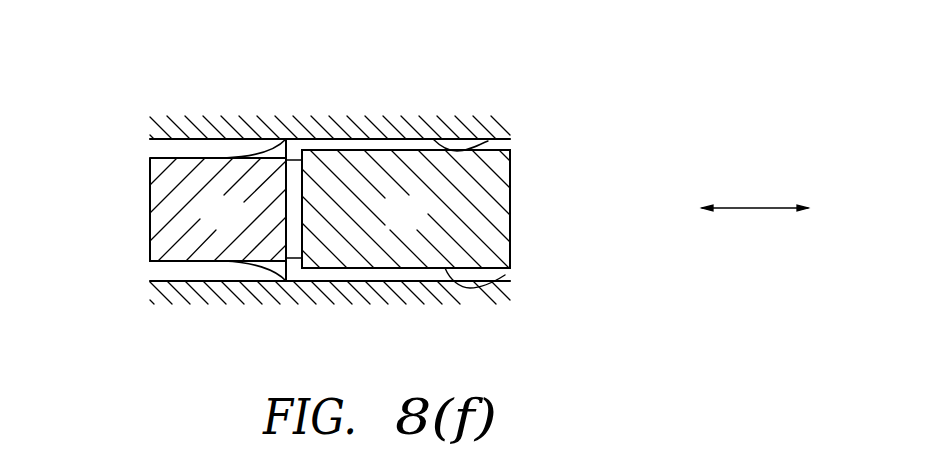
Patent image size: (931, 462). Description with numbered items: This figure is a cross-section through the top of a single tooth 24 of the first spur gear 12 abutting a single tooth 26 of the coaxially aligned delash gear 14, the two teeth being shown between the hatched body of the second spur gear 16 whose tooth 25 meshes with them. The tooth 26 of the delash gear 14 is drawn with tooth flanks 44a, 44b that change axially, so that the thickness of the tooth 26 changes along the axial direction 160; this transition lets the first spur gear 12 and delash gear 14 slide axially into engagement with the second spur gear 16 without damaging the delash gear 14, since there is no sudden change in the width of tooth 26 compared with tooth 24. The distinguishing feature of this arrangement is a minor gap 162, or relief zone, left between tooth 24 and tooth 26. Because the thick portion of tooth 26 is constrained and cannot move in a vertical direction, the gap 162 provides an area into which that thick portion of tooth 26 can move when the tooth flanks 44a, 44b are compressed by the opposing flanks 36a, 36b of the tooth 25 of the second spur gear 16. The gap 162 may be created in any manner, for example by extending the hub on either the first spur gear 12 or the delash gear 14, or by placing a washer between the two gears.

The first spur gear 12 is at (518, 210).
The delash gear 14 is at (136, 215).
The second spur gear 16 is at (518, 122).
The tooth of first spur gear 24 is at (424, 227).
The tooth of second spur gear 25 is at (358, 129).
The tooth of delash gear 26 is at (239, 227).
The flank of second spur gear tooth 36a is at (488, 141).
The flank of second spur gear tooth 36b is at (505, 275).
The tooth flank 44a is at (240, 152).
The tooth flank 44b is at (237, 263).
The axial direction 160 is at (747, 208).
The gap 162 is at (293, 182).